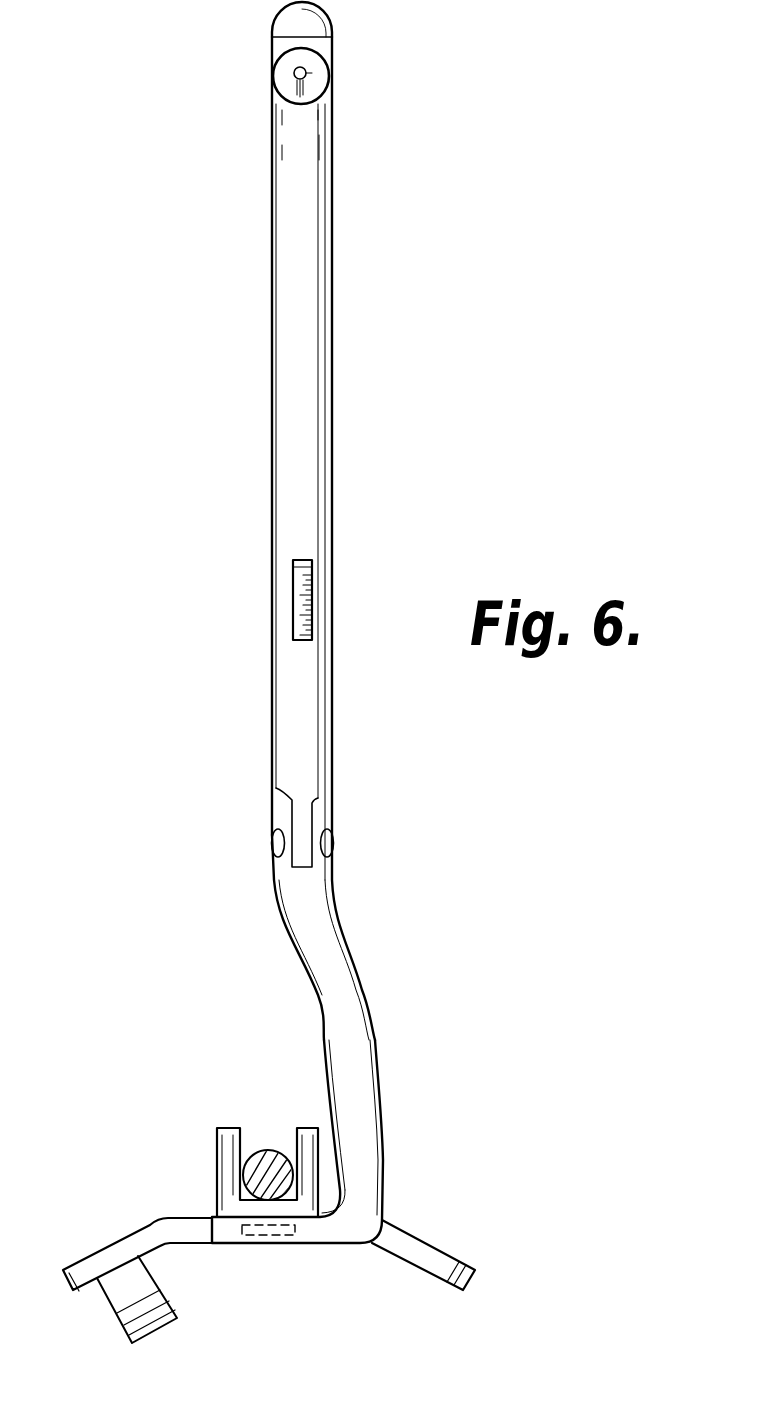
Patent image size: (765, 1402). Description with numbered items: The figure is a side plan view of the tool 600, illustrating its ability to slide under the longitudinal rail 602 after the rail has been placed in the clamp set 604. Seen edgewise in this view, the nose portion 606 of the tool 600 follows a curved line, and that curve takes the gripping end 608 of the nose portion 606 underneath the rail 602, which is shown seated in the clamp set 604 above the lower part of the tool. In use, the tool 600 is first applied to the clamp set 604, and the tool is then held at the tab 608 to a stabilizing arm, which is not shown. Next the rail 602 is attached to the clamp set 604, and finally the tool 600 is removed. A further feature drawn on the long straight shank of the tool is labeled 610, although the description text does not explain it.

The tool 600 is at (423, 534).
The longitudinal rail 602 is at (268, 1150).
The clamp set 604 is at (184, 1216).
The nose portion 606 is at (372, 1071).
The gripping end 608 is at (285, 1244).
The scale window 610 is at (294, 616).